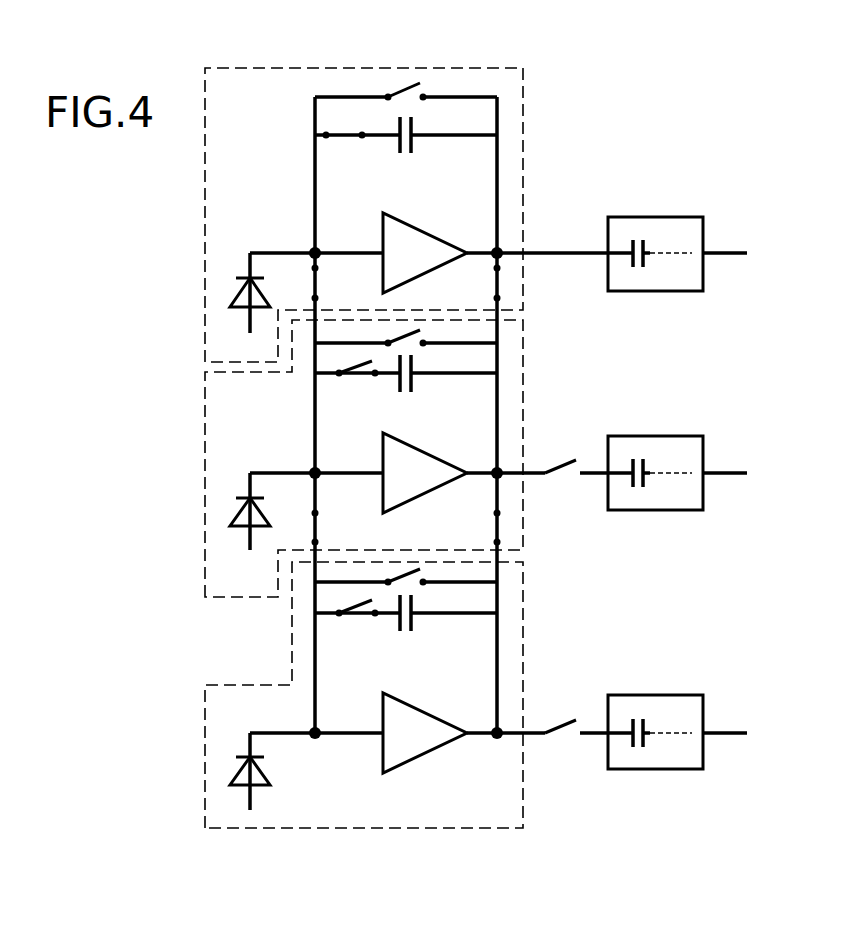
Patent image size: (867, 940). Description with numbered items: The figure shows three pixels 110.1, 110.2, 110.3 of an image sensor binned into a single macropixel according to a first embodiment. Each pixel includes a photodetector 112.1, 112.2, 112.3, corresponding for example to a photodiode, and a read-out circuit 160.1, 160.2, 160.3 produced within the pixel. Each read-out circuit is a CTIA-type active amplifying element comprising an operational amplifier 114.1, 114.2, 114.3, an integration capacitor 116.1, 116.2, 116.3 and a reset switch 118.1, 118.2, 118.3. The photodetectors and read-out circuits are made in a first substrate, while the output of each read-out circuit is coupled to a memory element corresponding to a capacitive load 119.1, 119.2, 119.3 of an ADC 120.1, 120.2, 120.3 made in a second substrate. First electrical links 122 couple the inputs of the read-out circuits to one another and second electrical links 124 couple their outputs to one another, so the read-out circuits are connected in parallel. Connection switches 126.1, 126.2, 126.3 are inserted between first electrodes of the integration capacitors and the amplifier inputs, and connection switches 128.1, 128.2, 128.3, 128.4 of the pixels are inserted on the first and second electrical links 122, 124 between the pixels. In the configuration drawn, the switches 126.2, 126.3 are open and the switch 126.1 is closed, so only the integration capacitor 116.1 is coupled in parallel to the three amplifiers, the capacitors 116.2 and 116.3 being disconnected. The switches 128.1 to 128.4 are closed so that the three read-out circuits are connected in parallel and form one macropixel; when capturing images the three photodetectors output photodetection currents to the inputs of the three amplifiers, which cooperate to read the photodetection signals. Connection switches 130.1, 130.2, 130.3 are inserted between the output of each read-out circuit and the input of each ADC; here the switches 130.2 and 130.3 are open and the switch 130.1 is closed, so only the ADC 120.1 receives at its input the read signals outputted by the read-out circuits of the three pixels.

The pixel 110.1 is at (523, 78).
The pixel 110.2 is at (523, 400).
The pixel 110.3 is at (523, 607).
The photodetector 112.1 is at (232, 300).
The photodetector 112.2 is at (232, 520).
The photodetector 112.3 is at (232, 780).
The operational amplifier 114.1 is at (390, 230).
The operational amplifier 114.2 is at (403, 497).
The operational amplifier 114.3 is at (393, 760).
The integration capacitor 116.1 is at (413, 143).
The integration capacitor 116.2 is at (413, 388).
The integration capacitor 116.3 is at (413, 628).
The reset switch 118.1 is at (405, 83).
The reset switch 118.2 is at (418, 331).
The reset switch 118.3 is at (405, 575).
The capacitive load 119.1 is at (652, 262).
The capacitive load 119.2 is at (652, 482).
The capacitive load 119.3 is at (652, 742).
The ADC 120.1 is at (692, 230).
The ADC 120.2 is at (692, 450).
The ADC 120.3 is at (692, 710).
The first electrical link 122 is at (315, 455).
The second electrical link 124 is at (498, 327).
The connection switch of integration capacitor 126.1 is at (343, 135).
The connection switch of integration capacitor 126.2 is at (357, 368).
The connection switch of integration capacitor 126.3 is at (356, 607).
The connection switch of pixels 128.1 is at (313, 283).
The connection switch of pixels 128.2 is at (498, 282).
The connection switch of pixels 128.3 is at (312, 530).
The connection switch of pixels 128.4 is at (498, 525).
The connection switch of read-out circuit 130.1 is at (557, 253).
The connection switch of read-out circuit 130.2 is at (570, 458).
The connection switch of read-out circuit 130.3 is at (558, 732).
The read-out circuit 160.1 is at (272, 142).
The read-out circuit 160.2 is at (298, 438).
The read-out circuit 160.3 is at (297, 697).